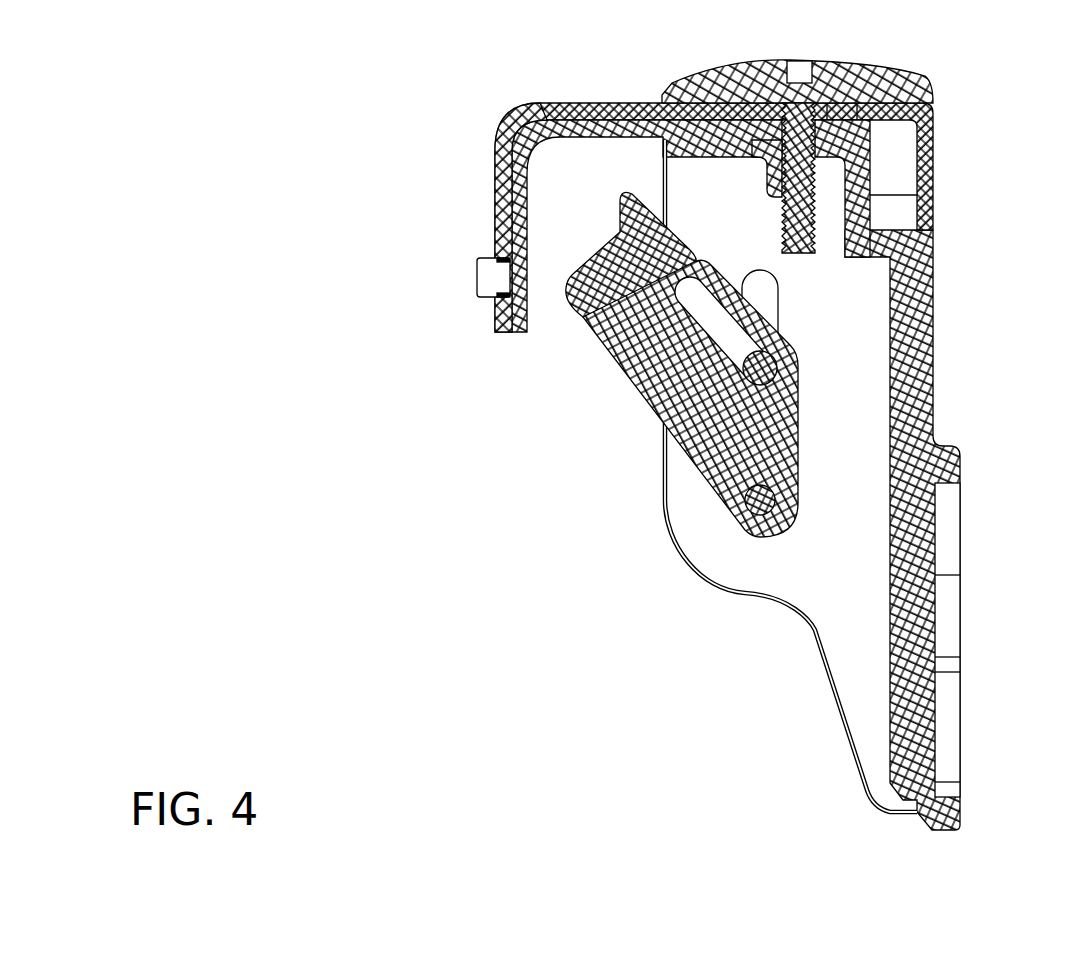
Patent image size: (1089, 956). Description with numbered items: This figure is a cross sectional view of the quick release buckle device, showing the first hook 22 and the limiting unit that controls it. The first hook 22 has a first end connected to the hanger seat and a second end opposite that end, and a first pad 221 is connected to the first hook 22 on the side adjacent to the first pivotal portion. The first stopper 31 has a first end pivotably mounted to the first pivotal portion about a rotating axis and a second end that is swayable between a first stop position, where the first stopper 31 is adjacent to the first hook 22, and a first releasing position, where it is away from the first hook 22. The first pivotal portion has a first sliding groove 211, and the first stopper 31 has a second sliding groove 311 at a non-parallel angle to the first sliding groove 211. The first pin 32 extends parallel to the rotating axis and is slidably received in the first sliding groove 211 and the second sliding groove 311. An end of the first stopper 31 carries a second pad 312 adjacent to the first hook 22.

The first hook 22 is at (607, 112).
The first pad 221 is at (527, 214).
The first sliding groove 211 is at (760, 285).
The first stopper 31 is at (672, 398).
The second sliding groove 311 is at (730, 313).
The second pad 312 is at (588, 298).
The first pin 32 is at (765, 368).